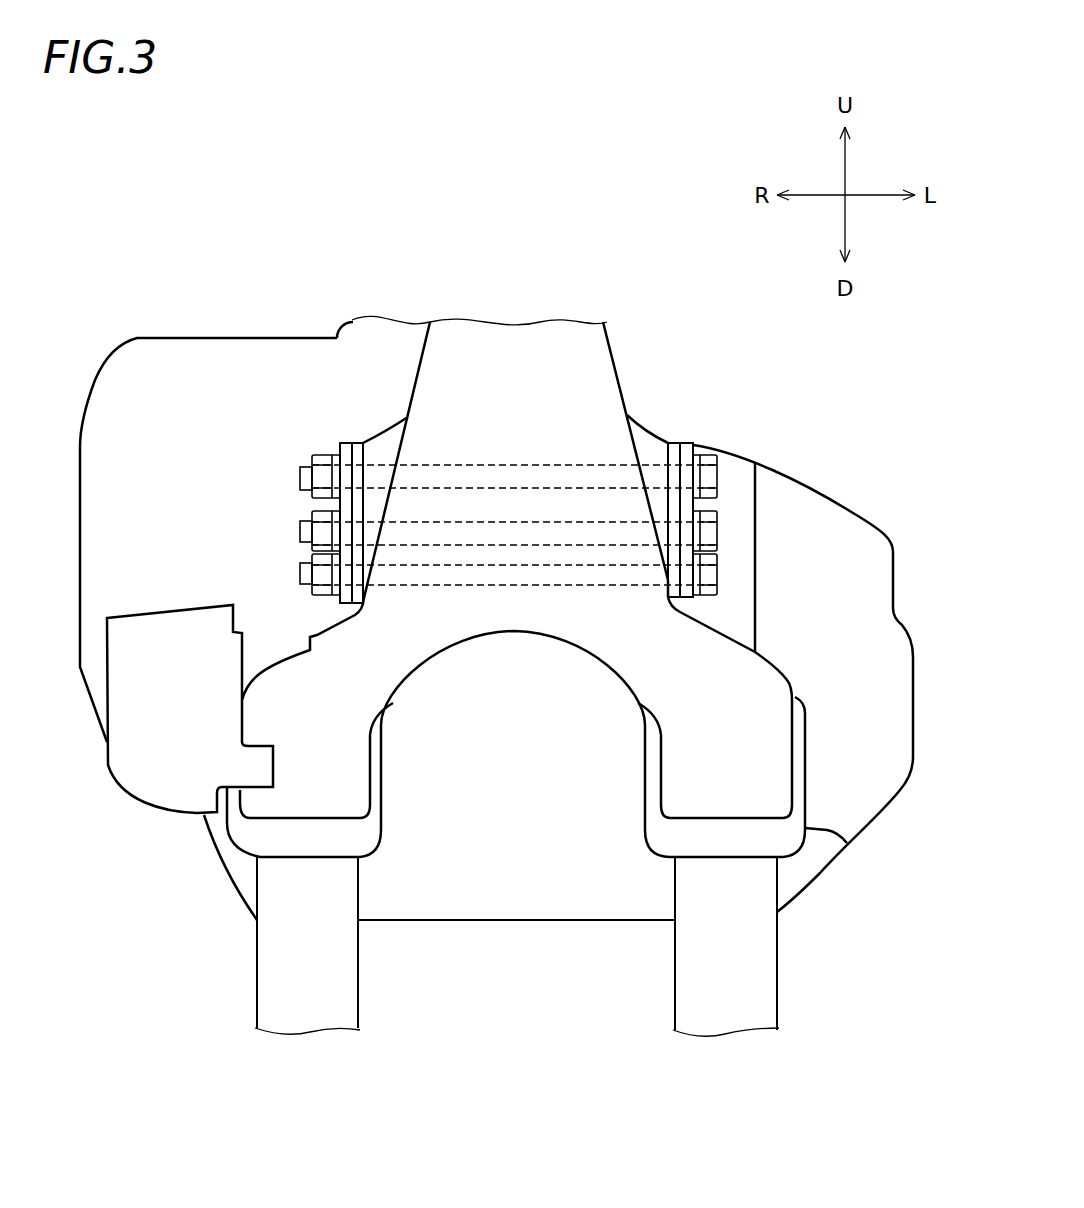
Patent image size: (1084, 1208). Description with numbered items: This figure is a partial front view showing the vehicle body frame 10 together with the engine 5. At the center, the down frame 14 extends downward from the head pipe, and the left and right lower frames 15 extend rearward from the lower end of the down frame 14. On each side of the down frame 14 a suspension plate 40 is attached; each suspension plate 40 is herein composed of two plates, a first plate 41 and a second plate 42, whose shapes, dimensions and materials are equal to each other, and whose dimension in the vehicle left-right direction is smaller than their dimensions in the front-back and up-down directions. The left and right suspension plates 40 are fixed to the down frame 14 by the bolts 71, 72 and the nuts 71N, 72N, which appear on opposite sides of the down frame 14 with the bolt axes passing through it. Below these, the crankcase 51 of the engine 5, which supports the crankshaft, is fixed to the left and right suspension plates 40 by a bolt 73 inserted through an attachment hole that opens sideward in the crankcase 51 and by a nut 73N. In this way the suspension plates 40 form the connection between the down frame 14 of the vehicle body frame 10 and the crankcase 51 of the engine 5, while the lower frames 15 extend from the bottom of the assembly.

The engine 5 is at (848, 500).
The vehicle body frame 10 is at (413, 351).
The down frame 14 is at (570, 369).
The lower frame 15 is at (268, 972).
The suspension plate 40 is at (478, 427).
The first plate 41 is at (344, 443).
The second plate 42 is at (358, 440).
The crankcase 51 is at (529, 898).
The bolt 71 is at (713, 478).
The bolt 72 is at (717, 532).
The bolt 73 is at (717, 572).
The nut 71N is at (323, 458).
The nut 72N is at (323, 521).
The nut 73N is at (323, 595).